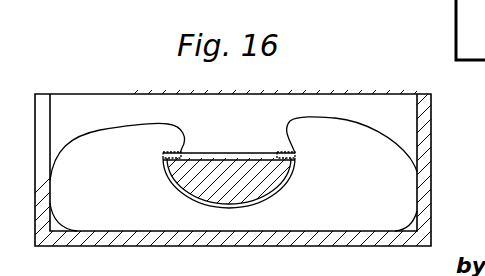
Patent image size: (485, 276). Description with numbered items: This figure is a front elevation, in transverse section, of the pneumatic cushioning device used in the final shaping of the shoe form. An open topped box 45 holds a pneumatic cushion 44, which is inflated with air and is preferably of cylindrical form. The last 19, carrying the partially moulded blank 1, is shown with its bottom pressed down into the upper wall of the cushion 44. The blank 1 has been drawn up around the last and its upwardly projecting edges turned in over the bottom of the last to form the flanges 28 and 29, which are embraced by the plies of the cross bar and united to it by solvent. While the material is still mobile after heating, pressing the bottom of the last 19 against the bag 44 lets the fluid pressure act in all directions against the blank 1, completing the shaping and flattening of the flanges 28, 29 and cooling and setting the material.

The blank 1 is at (277, 197).
The last 19 is at (228, 166).
The flange 28 is at (182, 154).
The flange 29 is at (277, 153).
The pneumatic cushion 44 is at (342, 148).
The open topped box 45 is at (431, 138).